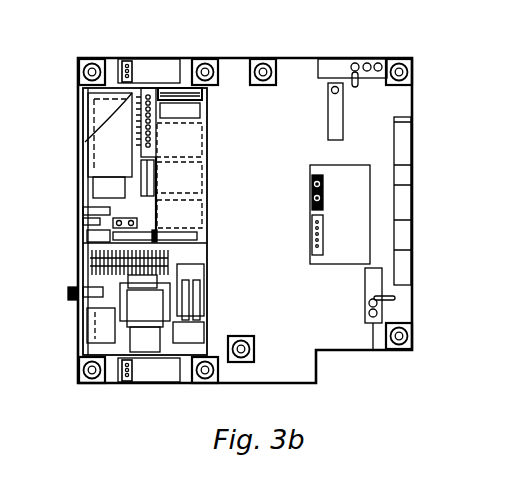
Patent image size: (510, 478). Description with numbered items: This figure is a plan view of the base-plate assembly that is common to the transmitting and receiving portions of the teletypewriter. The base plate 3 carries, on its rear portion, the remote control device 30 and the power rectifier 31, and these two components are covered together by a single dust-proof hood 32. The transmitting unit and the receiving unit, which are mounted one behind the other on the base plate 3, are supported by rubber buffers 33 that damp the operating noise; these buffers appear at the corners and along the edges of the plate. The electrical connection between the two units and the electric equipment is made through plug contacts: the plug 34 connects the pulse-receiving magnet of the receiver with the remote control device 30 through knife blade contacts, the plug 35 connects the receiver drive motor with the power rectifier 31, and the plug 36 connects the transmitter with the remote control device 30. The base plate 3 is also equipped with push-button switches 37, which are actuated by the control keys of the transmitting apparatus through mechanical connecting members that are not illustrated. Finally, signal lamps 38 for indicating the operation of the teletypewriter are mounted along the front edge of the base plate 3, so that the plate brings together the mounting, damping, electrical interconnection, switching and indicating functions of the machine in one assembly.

The base plate 3 is at (296, 75).
The remote control device 30 is at (66, 92).
The power rectifier 31 is at (66, 248).
The dust-proof hood 32 is at (92, 113).
The rubber buffers 33 is at (100, 59).
The plug 34 is at (122, 384).
The plug 35 is at (128, 59).
The plug 36 is at (315, 265).
The push-button switches 37 is at (377, 64).
The signal lamps 38 is at (405, 272).